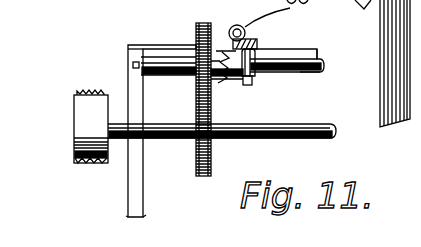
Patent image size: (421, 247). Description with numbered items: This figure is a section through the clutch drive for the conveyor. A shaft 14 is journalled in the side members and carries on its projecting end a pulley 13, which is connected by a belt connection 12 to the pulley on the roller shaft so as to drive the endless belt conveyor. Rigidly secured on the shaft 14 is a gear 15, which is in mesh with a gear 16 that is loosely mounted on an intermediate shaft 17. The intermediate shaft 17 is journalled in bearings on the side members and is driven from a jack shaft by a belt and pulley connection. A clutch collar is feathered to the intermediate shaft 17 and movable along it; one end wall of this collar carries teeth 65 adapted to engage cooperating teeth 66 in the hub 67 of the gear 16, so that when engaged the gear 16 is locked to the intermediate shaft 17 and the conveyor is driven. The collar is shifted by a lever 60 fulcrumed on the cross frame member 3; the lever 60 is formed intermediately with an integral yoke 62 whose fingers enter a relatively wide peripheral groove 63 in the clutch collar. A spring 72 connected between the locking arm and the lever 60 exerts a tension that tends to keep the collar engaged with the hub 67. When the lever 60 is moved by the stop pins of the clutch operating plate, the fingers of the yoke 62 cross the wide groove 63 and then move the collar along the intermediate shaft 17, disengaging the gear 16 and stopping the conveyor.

The cross frame member 3 is at (319, 46).
The belt connection 12 is at (84, 87).
The pulley 13 is at (76, 134).
The shaft 14 is at (312, 139).
The gear 15 is at (212, 162).
The gear 16 is at (196, 33).
The intermediate shaft 17 is at (312, 89).
The lever 60 is at (262, 47).
The yoke 62 is at (227, 84).
The peripheral groove 63 is at (247, 86).
The teeth 65 is at (255, 39).
The cooperating teeth 66 is at (223, 50).
The hub 67 is at (215, 50).
The spring 72 is at (290, 8).